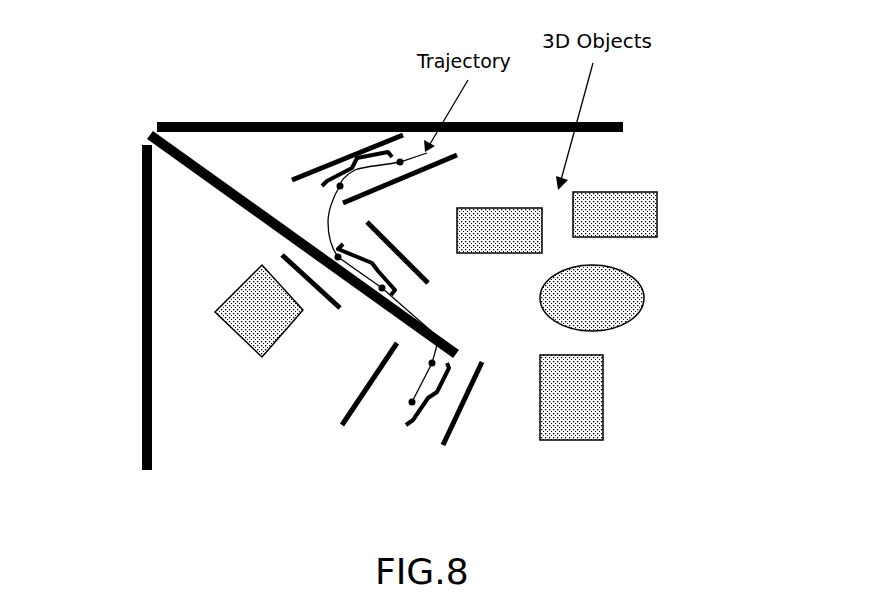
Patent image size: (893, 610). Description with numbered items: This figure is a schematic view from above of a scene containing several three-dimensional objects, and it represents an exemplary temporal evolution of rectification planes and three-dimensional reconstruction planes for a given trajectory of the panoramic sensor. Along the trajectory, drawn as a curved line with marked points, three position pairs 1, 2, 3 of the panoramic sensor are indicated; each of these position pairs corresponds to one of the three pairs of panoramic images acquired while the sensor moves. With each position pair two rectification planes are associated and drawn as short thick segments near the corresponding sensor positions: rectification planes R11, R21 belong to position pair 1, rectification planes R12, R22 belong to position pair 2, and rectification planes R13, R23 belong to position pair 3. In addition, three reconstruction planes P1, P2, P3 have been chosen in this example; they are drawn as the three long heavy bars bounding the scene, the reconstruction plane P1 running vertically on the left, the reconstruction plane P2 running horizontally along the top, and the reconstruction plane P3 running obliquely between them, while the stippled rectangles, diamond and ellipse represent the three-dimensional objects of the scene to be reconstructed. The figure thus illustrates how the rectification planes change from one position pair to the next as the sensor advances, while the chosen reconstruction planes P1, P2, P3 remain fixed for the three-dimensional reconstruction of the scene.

The reconstruction plane P1 is at (140, 458).
The reconstruction plane P2 is at (145, 136).
The reconstruction plane P3 is at (623, 127).
The position pair 1 is at (429, 394).
The position pair 2 is at (366, 269).
The position pair 3 is at (357, 160).
The rectification plane R11 is at (357, 399).
The rectification plane R12 is at (320, 300).
The rectification plane R13 is at (320, 160).
The rectification plane R21 is at (453, 420).
The rectification plane R22 is at (421, 253).
The rectification plane R23 is at (400, 184).